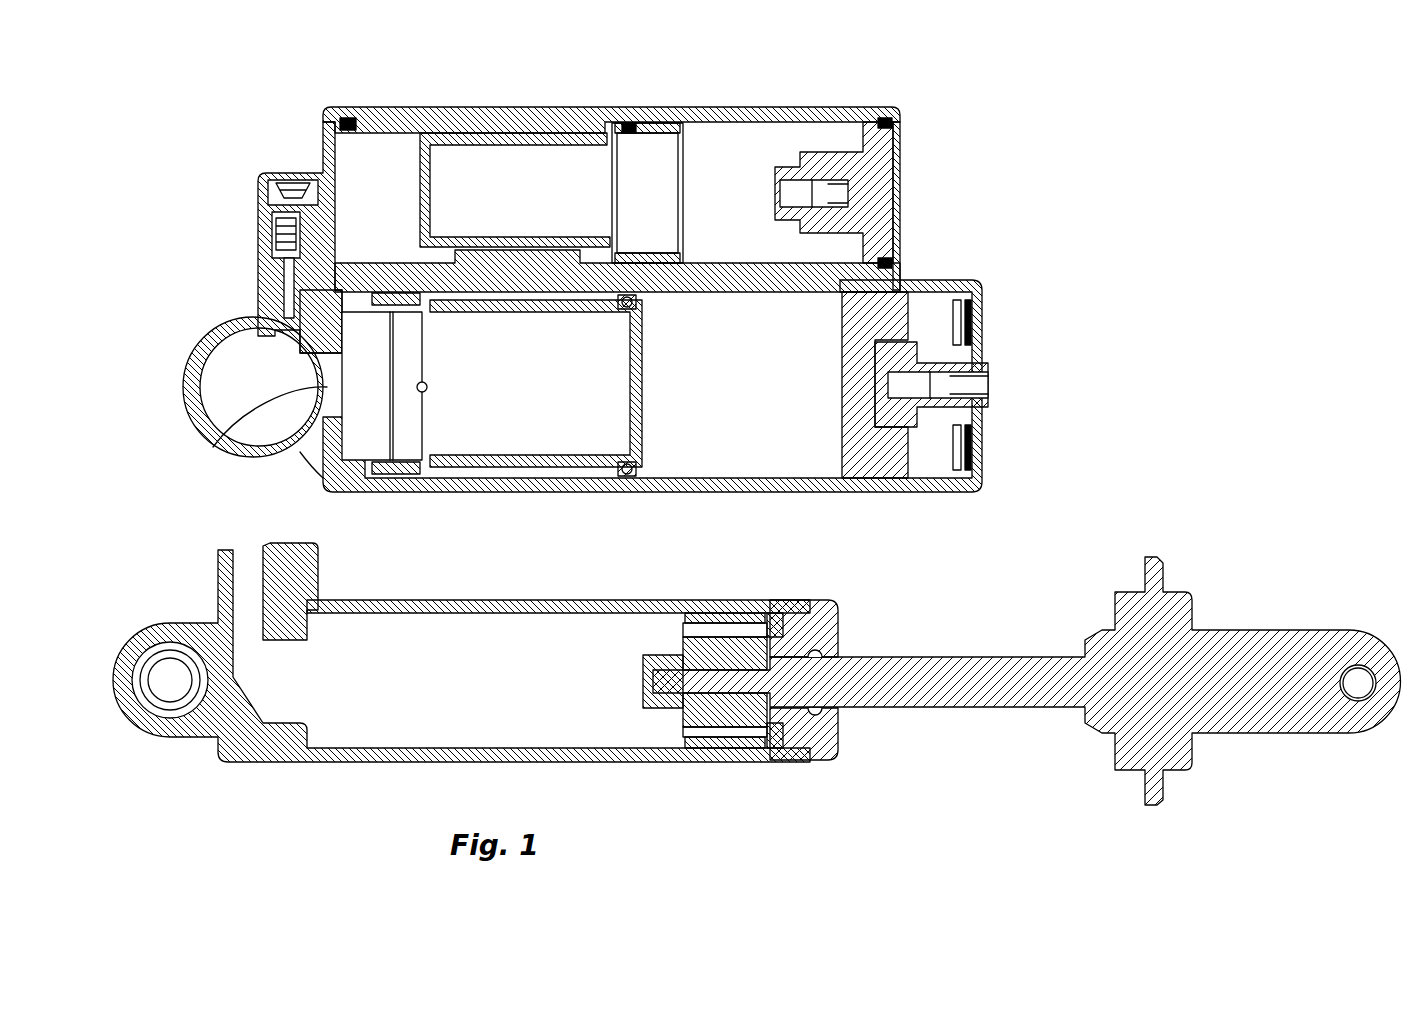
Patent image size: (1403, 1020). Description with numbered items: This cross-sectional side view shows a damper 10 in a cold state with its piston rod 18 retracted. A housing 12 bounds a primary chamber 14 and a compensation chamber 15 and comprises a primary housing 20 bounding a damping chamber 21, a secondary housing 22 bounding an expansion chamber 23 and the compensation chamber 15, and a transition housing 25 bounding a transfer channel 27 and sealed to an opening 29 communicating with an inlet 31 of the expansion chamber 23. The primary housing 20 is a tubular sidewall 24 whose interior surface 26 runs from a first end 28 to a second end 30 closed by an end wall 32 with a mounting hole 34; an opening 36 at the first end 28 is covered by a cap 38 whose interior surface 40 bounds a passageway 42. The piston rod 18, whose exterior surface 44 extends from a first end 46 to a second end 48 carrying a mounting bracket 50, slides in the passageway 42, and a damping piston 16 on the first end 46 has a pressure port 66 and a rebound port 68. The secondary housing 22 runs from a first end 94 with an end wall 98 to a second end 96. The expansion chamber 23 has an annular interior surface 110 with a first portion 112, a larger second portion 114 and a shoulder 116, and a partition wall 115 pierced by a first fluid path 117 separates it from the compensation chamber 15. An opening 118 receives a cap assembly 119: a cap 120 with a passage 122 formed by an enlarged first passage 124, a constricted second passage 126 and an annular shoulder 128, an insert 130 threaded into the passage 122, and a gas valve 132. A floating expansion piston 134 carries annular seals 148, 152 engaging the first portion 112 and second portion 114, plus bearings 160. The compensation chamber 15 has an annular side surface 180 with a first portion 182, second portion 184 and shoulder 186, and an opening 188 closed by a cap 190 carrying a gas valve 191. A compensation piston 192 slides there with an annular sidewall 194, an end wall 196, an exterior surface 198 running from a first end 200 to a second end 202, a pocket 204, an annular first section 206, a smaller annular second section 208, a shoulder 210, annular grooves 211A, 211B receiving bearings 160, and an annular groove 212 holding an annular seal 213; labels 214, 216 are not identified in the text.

The damper 10 is at (1095, 271).
The housing 12 is at (392, 530).
The primary chamber 14 is at (158, 592).
The compensation chamber 15 is at (540, 35).
The damping piston 16 is at (693, 712).
The piston rod 18 is at (955, 697).
The primary housing 20 is at (338, 600).
The damping chamber 21 is at (320, 660).
The secondary housing 22 is at (340, 493).
The expansion chamber 23 is at (370, 398).
The tubular sidewall 24 is at (535, 763).
The transition housing 25 is at (318, 563).
The interior surface 26 is at (600, 748).
The transfer channel 27 is at (253, 568).
The first end 28 is at (773, 760).
The opening 29 is at (230, 348).
The second end 30 is at (260, 762).
The inlet 31 is at (305, 383).
The end wall 32 is at (222, 693).
The mounting hole 34 is at (170, 673).
The opening 36 is at (807, 757).
The cap 38 is at (830, 628).
The interior surface 40 is at (817, 693).
The passageway 42 is at (812, 660).
The exterior surface 44 is at (995, 657).
The first end 46 is at (655, 660).
The second end 48 is at (1012, 707).
The mounting bracket 50 is at (1260, 632).
The pressure port 66 is at (720, 627).
The rebound port 68 is at (723, 735).
The first end 94 is at (283, 104).
The second end 96 is at (855, 96).
The end wall 98 is at (258, 258).
The annular interior surface 110 is at (803, 284).
The first portion 112 is at (482, 302).
The second portion 114 is at (815, 300).
The partition wall 115 is at (730, 272).
The shoulder 116 is at (573, 302).
The first fluid path 117 is at (588, 262).
The opening 118 is at (915, 300).
The cap assembly 119 is at (1004, 458).
The cap 120 is at (953, 487).
The passage 122 is at (860, 385).
The enlarged first passage 124 is at (928, 305).
The constricted second passage 126 is at (863, 410).
The annular shoulder 128 is at (910, 452).
The insert 130 is at (973, 338).
The gas valve 132 is at (978, 386).
The expansion piston 134 is at (503, 462).
The annular seal 148 is at (440, 255).
The annular seal 152 is at (641, 294).
The bearing 160 is at (673, 255).
The annular side surface 180 is at (757, 132).
The first portion 182 is at (352, 135).
The second portion 184 is at (793, 132).
The shoulder 186 is at (633, 125).
The opening 188 is at (878, 122).
The cap 190 is at (880, 145).
The gas valve 191 is at (862, 190).
The compensation piston 192 is at (455, 223).
The annular sidewall 194 is at (527, 150).
The end wall 196 is at (420, 190).
The exterior surface 198 is at (473, 148).
The first end 200 is at (686, 125).
The second end 202 is at (420, 145).
The pocket 204 is at (490, 197).
The annular first section 206 is at (650, 122).
The annular second section 208 is at (457, 140).
The shoulder 210 is at (595, 140).
The annular groove 211A is at (640, 258).
The annular groove 211B is at (660, 257).
The annular groove 212 is at (638, 257).
The annular seal 213 is at (660, 297).
The piston part 214 is at (377, 143).
The piston part 216 is at (492, 168).